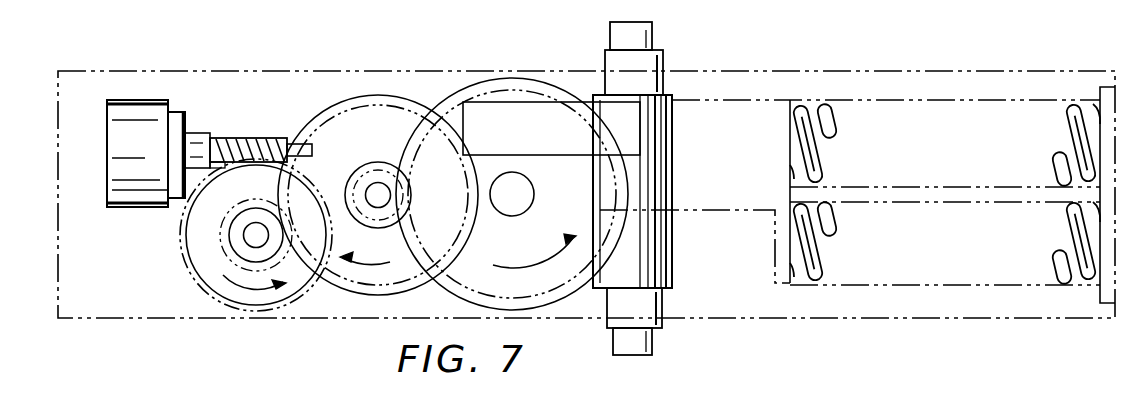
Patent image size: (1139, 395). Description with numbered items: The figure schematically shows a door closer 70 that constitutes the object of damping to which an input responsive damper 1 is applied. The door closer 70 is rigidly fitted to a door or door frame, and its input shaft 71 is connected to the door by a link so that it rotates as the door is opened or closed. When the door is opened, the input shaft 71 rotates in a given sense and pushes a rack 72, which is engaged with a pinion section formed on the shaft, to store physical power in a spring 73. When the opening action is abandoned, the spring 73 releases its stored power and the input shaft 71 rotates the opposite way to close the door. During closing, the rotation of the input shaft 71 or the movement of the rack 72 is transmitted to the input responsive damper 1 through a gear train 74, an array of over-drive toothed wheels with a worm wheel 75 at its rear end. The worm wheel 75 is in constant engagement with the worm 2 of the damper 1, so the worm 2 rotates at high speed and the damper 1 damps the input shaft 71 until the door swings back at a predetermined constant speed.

The input responsive damper 1 is at (156, 88).
The worm 2 is at (240, 137).
The door closer 70 is at (887, 62).
The input shaft 71 is at (656, 58).
The rack 72 is at (741, 192).
The spring 73 is at (1068, 120).
The gear train 74 is at (330, 97).
The worm wheel 75 is at (196, 262).